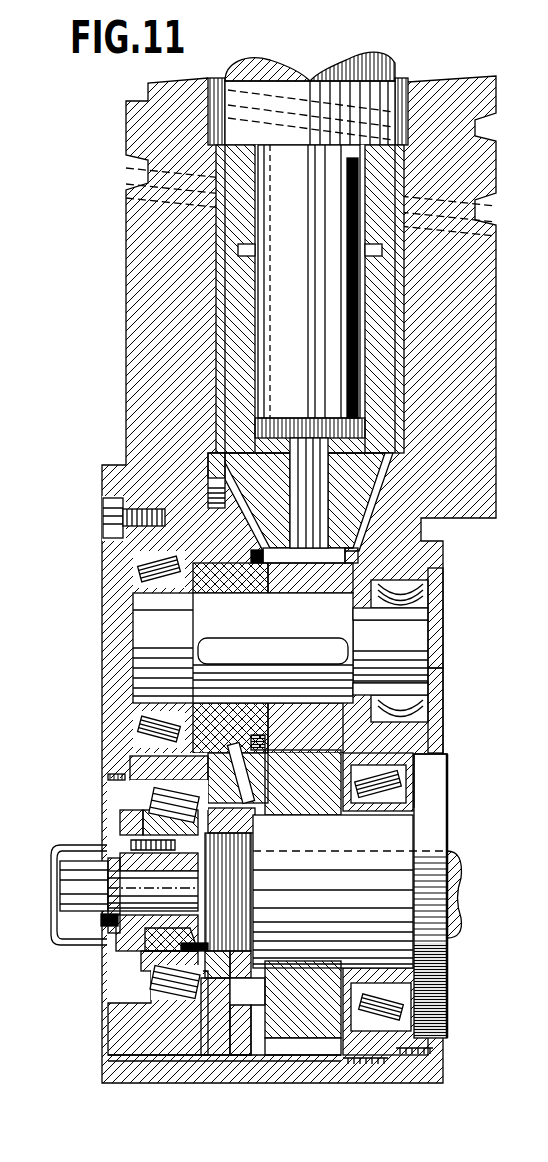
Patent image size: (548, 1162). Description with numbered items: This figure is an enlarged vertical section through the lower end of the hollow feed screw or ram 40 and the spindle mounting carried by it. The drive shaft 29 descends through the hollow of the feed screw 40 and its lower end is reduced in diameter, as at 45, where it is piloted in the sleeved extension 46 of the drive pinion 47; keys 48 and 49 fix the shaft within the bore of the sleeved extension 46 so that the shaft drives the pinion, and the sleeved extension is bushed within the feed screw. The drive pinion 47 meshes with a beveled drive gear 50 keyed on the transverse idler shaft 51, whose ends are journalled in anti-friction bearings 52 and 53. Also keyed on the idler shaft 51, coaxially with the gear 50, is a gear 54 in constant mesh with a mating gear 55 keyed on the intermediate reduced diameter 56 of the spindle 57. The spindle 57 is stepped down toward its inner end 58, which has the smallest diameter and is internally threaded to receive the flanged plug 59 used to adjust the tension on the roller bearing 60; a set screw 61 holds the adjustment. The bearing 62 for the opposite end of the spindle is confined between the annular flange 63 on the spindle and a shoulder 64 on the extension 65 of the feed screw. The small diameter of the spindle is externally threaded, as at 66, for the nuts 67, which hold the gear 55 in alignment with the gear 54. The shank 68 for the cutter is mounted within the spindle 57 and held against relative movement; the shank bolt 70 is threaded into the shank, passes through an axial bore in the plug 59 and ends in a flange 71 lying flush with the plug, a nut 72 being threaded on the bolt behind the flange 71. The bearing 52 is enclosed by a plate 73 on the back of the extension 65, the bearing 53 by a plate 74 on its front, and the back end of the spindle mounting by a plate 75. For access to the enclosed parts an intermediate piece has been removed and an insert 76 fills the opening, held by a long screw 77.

The drive shaft 29 is at (352, 68).
The hollow feed screw or ram 40 is at (155, 135).
The reduced diameter end of drive shaft 45 is at (275, 297).
The sleeved extension 46 is at (230, 252).
The drive pinion 47 is at (250, 478).
The key 48 is at (250, 313).
The key 49 is at (352, 345).
The beveled drive gear 50 is at (230, 560).
The transverse idler shaft 51 is at (160, 618).
The anti-friction bearing 52 is at (157, 717).
The anti-friction bearing 53 is at (420, 585).
The gear 54 is at (300, 563).
The mating gear 55 is at (303, 1010).
The intermediate reduced diameter of spindle 56 is at (330, 860).
The spindle 57 is at (447, 760).
The inner end of spindle 58 is at (142, 978).
The plug 59 is at (142, 928).
The roller bearing 60 is at (165, 787).
The set screw 61 is at (112, 850).
The bearing 62 is at (430, 730).
The annular flange 63 is at (420, 805).
The shoulder 64 is at (432, 695).
The extension of feed screw 65 is at (385, 602).
The external threads 66 is at (225, 857).
The nuts 67 is at (218, 1030).
The shank 68 is at (442, 850).
The shank bolt 70 is at (129, 886).
The flange 71 is at (95, 914).
The nut 72 is at (80, 868).
The plate 73 is at (112, 565).
The plate 74 is at (435, 636).
The plate 75 is at (142, 950).
The insert 76 is at (237, 1030).
The long screw 77 is at (138, 1057).